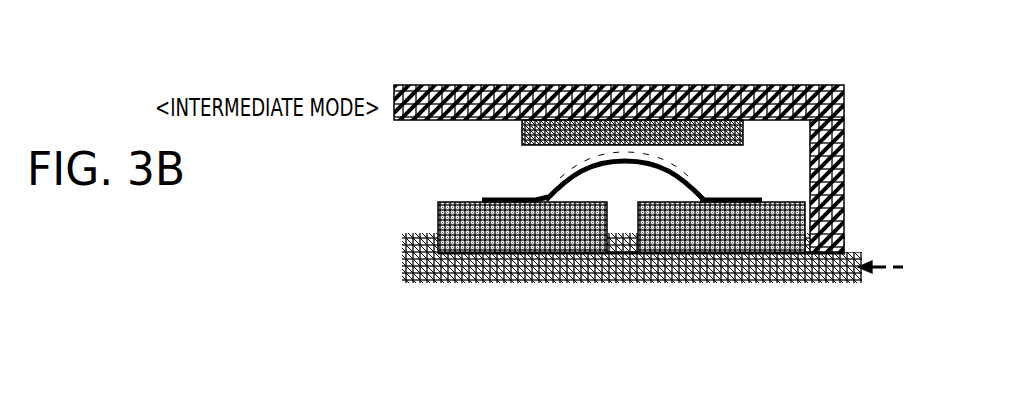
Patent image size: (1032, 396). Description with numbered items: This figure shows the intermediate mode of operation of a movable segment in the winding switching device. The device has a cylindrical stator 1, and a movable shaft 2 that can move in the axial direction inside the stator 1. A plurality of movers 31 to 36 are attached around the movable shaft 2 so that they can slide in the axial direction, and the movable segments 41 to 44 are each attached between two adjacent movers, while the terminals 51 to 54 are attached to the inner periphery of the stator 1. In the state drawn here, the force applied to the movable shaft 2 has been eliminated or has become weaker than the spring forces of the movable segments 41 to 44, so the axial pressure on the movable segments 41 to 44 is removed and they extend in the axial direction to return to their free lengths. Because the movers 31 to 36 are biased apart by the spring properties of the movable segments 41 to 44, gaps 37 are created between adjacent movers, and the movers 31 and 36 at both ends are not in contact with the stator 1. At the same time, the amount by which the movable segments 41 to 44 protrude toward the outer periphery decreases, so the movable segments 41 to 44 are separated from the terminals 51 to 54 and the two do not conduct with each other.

The stator 1 is at (797, 83).
The movable shaft 2 is at (860, 250).
The mover 31 is at (564, 223).
The mover 36 is at (472, 215).
The gap 37 is at (623, 238).
The movable segment 41 is at (522, 173).
The movable segment 44 is at (583, 166).
The terminal 51 is at (643, 83).
The terminal 54 is at (694, 130).